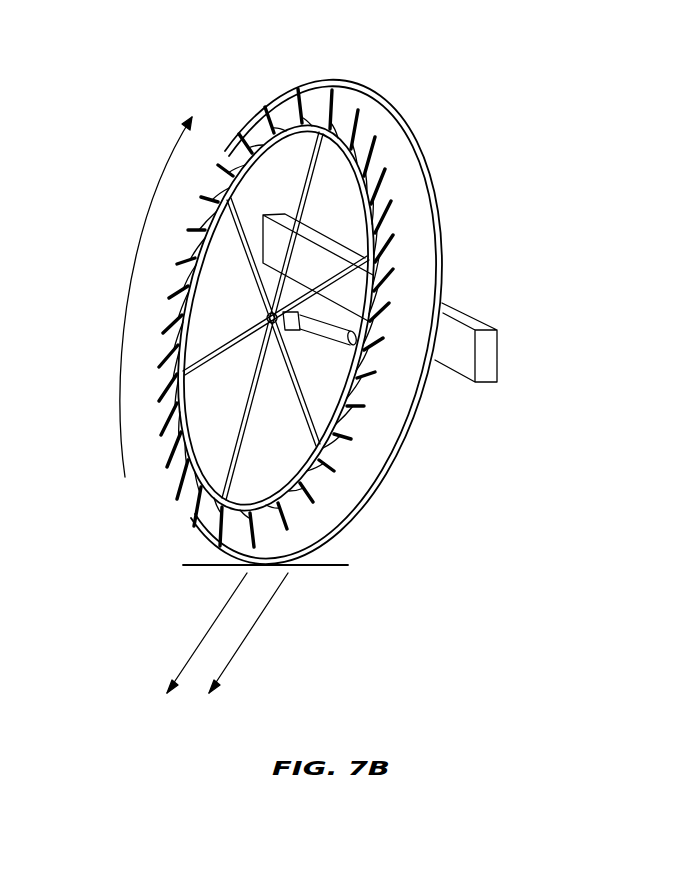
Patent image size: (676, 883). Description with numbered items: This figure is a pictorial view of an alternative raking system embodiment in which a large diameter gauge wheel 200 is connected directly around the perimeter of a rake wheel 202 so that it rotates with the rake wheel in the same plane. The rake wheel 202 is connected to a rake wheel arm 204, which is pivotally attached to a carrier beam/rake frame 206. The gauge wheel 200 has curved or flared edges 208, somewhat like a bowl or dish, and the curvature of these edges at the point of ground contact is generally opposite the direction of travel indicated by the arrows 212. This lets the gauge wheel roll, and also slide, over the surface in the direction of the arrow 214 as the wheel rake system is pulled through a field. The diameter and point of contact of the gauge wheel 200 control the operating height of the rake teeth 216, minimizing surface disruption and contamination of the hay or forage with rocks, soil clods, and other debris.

The large diameter gauge wheel 200 is at (356, 289).
The rake wheel 202 is at (262, 145).
The rake wheel arm 204 is at (320, 344).
The carrier beam/rake frame 206 is at (322, 265).
The curved or flared edges 208 is at (415, 237).
The arrows indicating direction of travel 212 is at (240, 643).
The arrow indicating rolling direction 214 is at (127, 293).
The rake teeth 216 is at (177, 513).